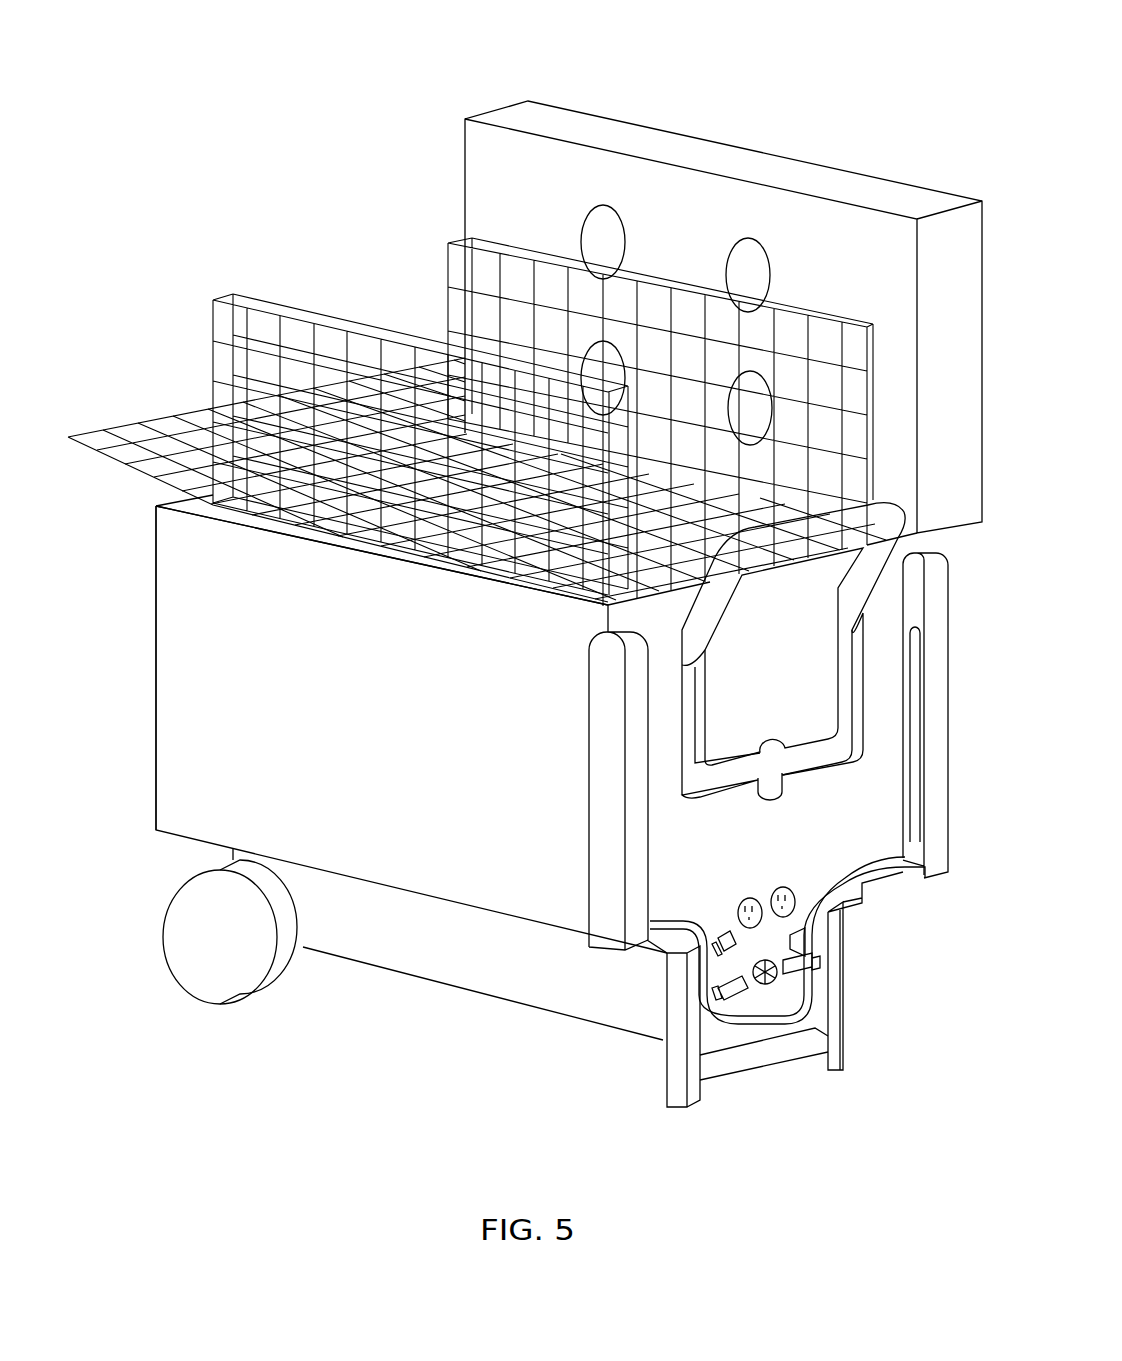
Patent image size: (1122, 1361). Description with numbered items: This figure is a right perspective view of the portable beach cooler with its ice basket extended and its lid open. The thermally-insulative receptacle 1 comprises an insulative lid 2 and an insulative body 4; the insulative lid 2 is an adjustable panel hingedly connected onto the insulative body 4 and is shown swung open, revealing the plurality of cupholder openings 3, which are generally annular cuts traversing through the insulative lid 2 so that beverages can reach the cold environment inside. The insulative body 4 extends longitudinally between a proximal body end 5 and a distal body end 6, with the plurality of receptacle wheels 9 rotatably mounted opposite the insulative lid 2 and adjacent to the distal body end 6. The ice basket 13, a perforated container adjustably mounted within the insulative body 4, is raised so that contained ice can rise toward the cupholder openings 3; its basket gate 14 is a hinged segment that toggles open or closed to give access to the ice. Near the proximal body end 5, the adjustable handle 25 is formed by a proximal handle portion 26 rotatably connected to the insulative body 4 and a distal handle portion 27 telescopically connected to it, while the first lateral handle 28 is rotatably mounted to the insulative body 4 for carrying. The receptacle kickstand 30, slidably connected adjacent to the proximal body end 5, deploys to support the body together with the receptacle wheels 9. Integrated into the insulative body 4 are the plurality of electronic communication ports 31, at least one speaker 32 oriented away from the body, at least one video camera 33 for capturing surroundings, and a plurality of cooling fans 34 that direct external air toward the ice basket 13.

The thermally-insulative receptacle 1 is at (764, 29).
The insulative lid 2 is at (509, 122).
The plurality of cupholder openings 3 is at (586, 226).
The insulative body 4 is at (358, 745).
The proximal body end 5 is at (520, 630).
The distal body end 6 is at (218, 616).
The plurality of receptacle wheels 9 is at (248, 980).
The ice basket 13 is at (338, 244).
The basket gate 14 is at (210, 410).
The adjustable handle 25 is at (545, 824).
The proximal handle portion 26 is at (570, 758).
The distal handle portion 27 is at (826, 858).
The first lateral handle 28 is at (787, 553).
The receptacle kickstand 30 is at (672, 980).
The plurality of electronic communication ports 31 is at (748, 898).
The at least one speaker 32 is at (720, 936).
The at least one video camera 33 is at (727, 990).
The plurality of cooling fans 34 is at (772, 980).